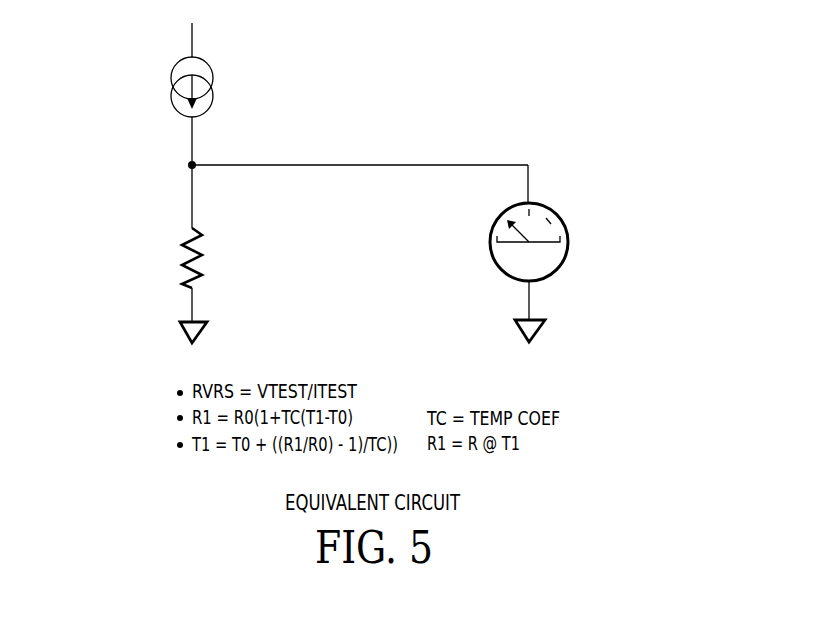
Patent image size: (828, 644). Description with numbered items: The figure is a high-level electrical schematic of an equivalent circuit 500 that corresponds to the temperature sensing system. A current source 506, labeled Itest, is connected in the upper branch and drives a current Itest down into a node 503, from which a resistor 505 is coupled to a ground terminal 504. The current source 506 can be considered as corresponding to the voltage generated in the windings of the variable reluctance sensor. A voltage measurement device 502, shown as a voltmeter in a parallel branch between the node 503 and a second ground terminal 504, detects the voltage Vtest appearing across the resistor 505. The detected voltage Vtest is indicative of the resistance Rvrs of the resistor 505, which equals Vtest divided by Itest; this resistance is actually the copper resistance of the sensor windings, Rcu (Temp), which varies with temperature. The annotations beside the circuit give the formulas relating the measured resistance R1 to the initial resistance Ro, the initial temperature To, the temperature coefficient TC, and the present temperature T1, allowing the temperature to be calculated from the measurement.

The equivalent circuit 500 is at (481, 61).
The voltage measurement device 502 is at (573, 217).
The node 503 is at (198, 157).
The ground terminal 504 is at (216, 336).
The resistor 505 is at (172, 258).
The current source 506 is at (223, 72).